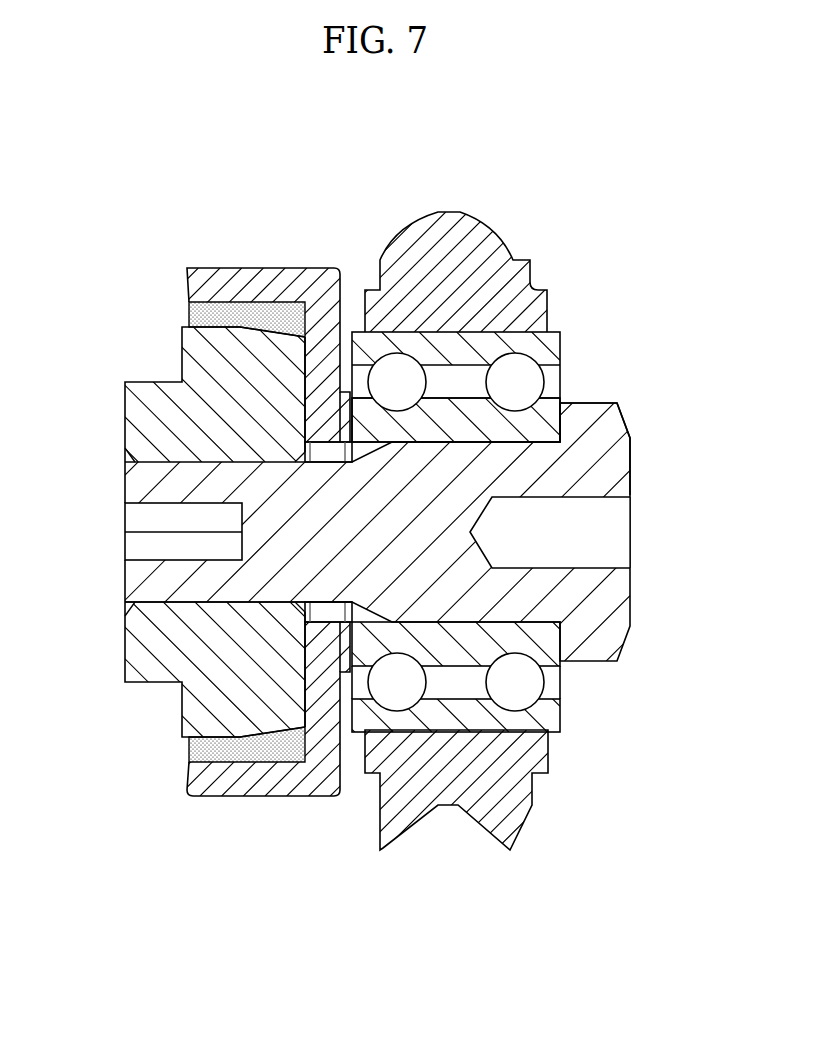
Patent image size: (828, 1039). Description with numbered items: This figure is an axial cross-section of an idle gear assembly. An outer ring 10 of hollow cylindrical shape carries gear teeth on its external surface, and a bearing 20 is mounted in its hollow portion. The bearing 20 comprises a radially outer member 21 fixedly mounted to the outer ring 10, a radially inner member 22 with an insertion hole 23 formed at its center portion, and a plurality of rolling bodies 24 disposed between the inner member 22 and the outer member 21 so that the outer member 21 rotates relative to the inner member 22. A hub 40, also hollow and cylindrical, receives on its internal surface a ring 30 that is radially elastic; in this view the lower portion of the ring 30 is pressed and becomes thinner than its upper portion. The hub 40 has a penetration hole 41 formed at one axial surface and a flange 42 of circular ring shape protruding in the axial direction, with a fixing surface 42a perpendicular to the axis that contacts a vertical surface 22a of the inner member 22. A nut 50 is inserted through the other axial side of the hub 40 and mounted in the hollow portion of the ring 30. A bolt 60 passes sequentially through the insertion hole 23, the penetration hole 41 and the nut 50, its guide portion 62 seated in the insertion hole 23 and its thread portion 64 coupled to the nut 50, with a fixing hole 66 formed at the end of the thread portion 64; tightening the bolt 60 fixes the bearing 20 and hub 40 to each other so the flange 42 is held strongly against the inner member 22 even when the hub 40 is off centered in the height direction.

The outer ring 10 is at (537, 284).
The bearing 20 is at (534, 532).
The outer member 21 is at (560, 705).
The inner member 22 is at (545, 652).
The vertical surface 22a is at (355, 423).
The insertion hole 23 is at (540, 470).
The rolling bodies 24 is at (538, 624).
The ring 30 is at (188, 315).
The hub 40 is at (233, 806).
The penetration hole 41 is at (325, 455).
The flange 42 is at (346, 387).
The fixing surface 42a is at (296, 370).
The nut 50 is at (133, 647).
The bolt 60 is at (618, 434).
The guide portion 62 is at (480, 598).
The thread portion 64 is at (190, 587).
The fixing hole 66 is at (158, 548).